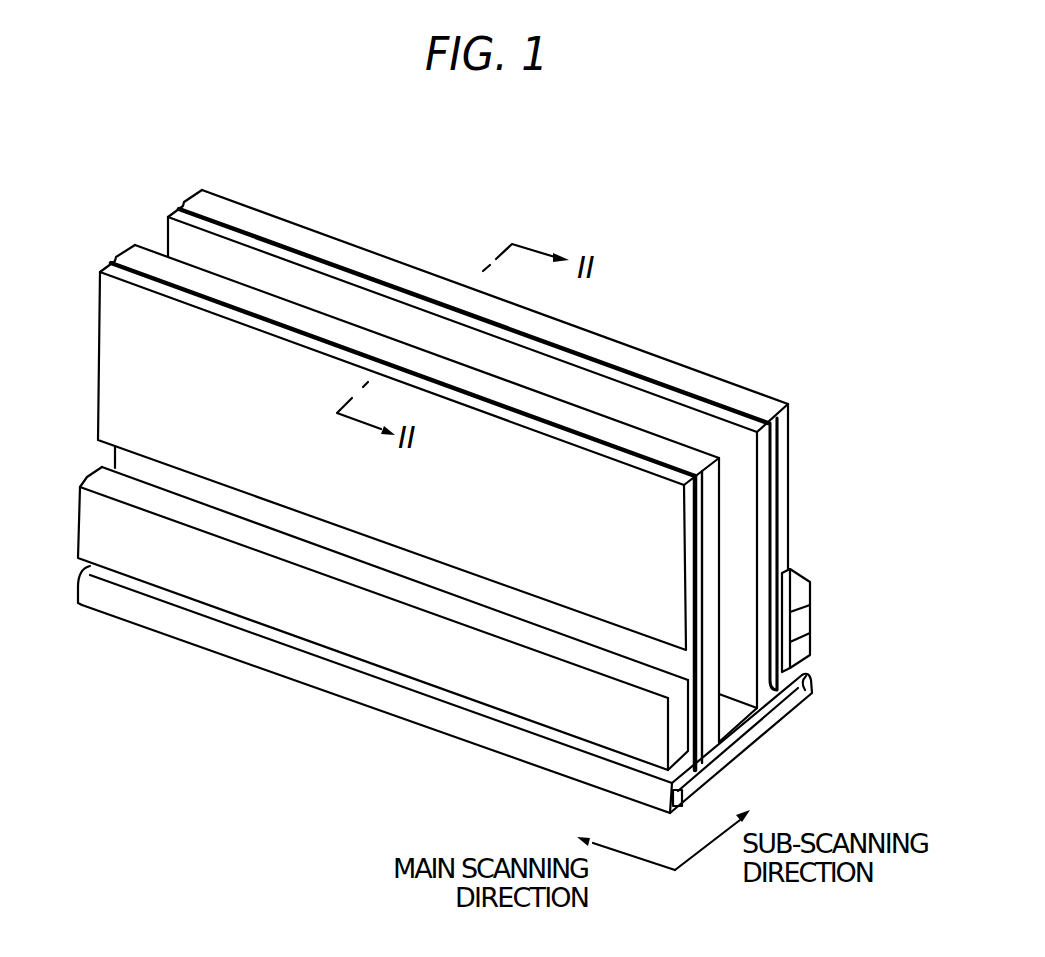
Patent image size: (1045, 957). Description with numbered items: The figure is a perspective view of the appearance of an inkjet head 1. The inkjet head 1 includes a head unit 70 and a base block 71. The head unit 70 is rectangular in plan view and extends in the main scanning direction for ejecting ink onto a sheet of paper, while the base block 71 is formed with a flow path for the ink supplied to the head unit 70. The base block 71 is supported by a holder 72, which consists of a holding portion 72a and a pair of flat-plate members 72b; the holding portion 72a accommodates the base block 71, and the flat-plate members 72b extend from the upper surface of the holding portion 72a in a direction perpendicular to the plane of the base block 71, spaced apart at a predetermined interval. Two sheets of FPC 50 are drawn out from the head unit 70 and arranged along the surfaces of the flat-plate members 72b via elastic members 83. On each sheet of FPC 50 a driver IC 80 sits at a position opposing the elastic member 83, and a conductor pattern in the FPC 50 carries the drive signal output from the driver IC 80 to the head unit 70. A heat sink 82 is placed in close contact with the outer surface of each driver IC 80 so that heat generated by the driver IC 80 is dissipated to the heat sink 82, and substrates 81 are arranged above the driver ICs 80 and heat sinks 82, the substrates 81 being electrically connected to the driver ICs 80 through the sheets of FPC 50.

The inkjet head 1 is at (655, 236).
The FPC 50 is at (812, 672).
The head unit 70 is at (836, 701).
The base block 71 is at (768, 723).
The holder 72 is at (633, 368).
The holding portion 72a is at (715, 750).
The flat-plate members 72b is at (665, 450).
The driver IC 80 is at (810, 633).
The substrates 81 is at (690, 503).
The heat sink 82 is at (95, 478).
The elastic member 83 is at (810, 605).